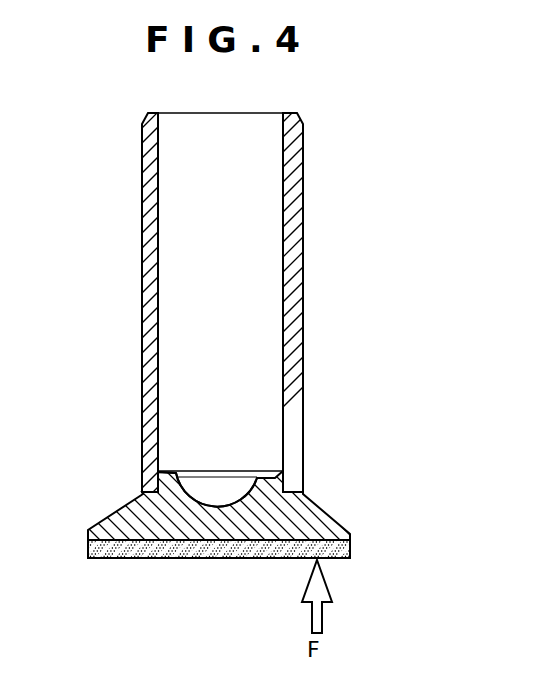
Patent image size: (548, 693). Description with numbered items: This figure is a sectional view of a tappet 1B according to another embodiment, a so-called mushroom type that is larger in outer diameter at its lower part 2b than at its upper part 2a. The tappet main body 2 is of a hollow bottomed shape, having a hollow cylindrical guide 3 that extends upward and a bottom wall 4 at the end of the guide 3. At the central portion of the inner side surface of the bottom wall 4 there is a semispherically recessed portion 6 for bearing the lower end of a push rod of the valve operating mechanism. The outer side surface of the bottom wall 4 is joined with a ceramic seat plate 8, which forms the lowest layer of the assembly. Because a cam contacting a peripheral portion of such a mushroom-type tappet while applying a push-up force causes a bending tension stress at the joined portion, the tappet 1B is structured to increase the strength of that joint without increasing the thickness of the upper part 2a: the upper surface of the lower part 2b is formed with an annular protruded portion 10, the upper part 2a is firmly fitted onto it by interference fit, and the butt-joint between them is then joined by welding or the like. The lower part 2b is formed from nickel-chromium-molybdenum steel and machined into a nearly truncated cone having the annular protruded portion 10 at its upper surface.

The tappet 1B is at (274, 350).
The tappet main body 2 is at (274, 325).
The upper part 2a is at (297, 270).
The lower part 2b is at (308, 517).
The hollow cylindrical guide 3 is at (303, 217).
The bottom wall 4 is at (224, 528).
The semispherically recessed portion 6 is at (227, 507).
The ceramic seat plate 8 is at (347, 548).
The protruded portion 10 is at (172, 470).